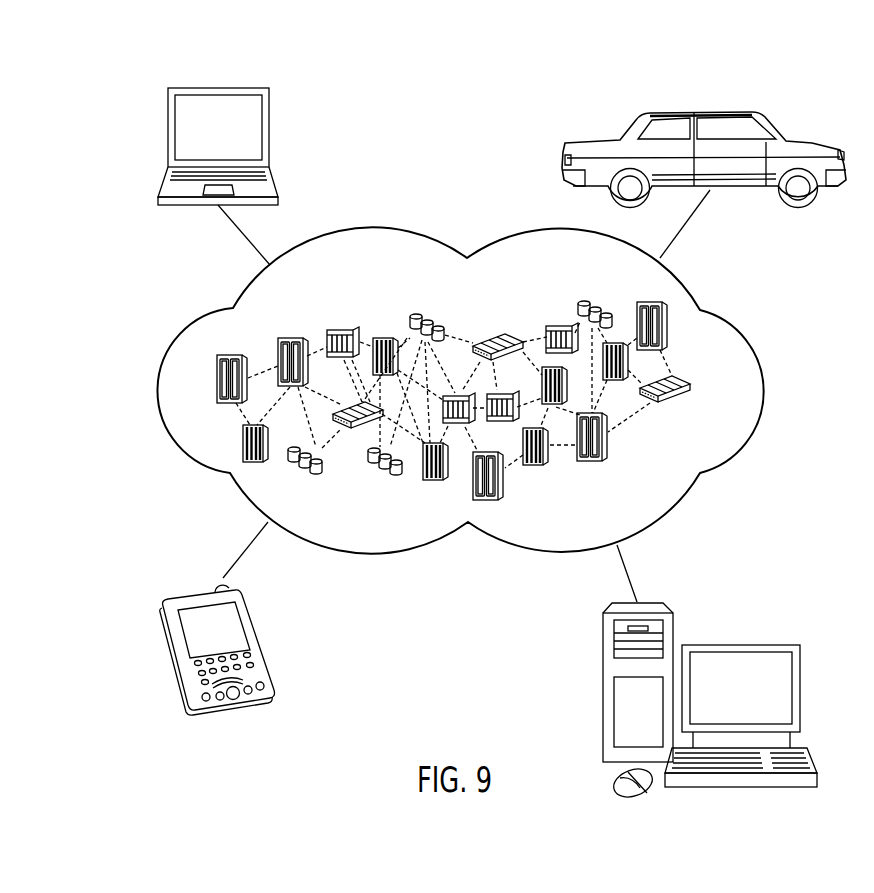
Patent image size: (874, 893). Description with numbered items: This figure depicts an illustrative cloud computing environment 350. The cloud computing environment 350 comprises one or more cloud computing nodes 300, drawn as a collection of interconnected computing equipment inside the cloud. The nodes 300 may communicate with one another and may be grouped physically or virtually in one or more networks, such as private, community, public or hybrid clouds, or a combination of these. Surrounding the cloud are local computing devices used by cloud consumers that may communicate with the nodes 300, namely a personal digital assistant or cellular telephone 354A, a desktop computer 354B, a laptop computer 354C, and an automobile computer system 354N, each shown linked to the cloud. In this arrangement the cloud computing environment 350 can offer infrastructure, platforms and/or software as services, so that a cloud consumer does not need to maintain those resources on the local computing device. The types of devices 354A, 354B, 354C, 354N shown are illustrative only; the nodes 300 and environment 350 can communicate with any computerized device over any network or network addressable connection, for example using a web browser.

The cloud computing node 300 is at (702, 390).
The cloud computing environment 350 is at (750, 312).
The personal digital assistant (PDA) or cellular telephone 354A is at (202, 592).
The desktop computer 354B is at (742, 643).
The laptop computer 354C is at (218, 88).
The automobile computer system 354N is at (686, 112).